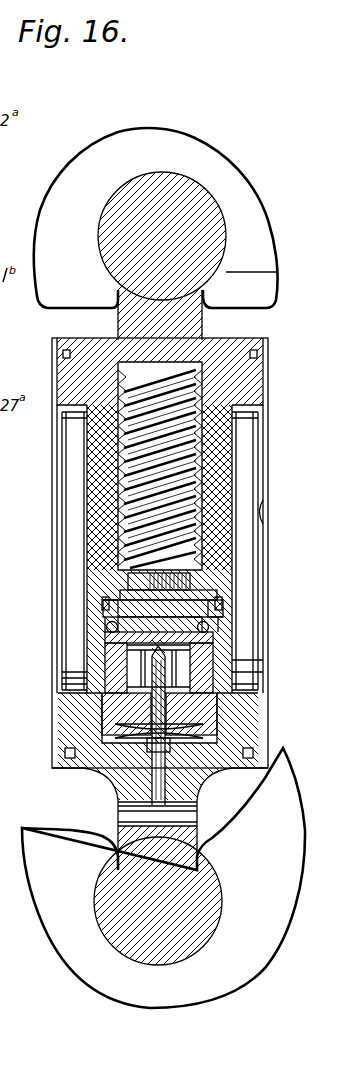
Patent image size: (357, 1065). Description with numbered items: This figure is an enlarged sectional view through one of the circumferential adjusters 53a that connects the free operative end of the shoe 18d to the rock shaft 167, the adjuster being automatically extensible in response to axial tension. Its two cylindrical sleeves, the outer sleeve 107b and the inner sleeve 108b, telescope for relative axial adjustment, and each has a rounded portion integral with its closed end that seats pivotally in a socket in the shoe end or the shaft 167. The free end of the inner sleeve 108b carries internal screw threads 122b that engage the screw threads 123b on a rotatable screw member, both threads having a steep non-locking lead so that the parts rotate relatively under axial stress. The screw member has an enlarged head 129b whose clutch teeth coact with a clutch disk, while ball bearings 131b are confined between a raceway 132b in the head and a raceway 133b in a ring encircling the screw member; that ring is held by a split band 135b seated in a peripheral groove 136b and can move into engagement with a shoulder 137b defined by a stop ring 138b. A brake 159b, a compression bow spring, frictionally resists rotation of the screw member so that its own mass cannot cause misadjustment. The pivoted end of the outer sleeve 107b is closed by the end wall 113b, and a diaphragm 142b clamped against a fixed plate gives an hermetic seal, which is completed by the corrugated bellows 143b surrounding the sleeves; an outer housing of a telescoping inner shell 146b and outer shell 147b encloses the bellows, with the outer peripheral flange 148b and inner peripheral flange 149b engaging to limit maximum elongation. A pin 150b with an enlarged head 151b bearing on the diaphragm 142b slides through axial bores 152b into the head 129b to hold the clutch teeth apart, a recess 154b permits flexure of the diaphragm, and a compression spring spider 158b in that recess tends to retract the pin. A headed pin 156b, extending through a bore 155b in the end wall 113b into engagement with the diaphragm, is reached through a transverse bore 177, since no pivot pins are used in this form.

The circumferential adjuster 53a is at (231, 152).
The shoe 18d is at (246, 202).
The outer shell 147b is at (267, 385).
The outer peripheral flange 148b is at (267, 477).
The inner shell 146b is at (278, 514).
The inner sleeve 108b is at (211, 445).
The outer sleeve 107b is at (229, 428).
The screw threads 123b is at (205, 390).
The internal screw threads 122b is at (197, 468).
The stop ring 138b is at (238, 590).
The peripheral groove 136b is at (230, 553).
The split band 135b is at (235, 570).
The inner peripheral flange 149b is at (230, 605).
The shoulder 137b is at (213, 616).
The raceway 133b is at (107, 611).
The ball bearings 131b is at (110, 625).
The enlarged head 129b is at (214, 640).
The raceway 132b is at (103, 647).
The brake 159b is at (189, 673).
The bellows 143b is at (246, 667).
The axial bores 152b is at (80, 682).
The end wall 113b is at (218, 759).
The pin 150b is at (160, 712).
The recess 154b is at (107, 733).
The compression spring spider 158b is at (181, 740).
The diaphragm 142b is at (213, 720).
The enlarged head 151b is at (140, 742).
The bore 155b is at (133, 773).
The headed pin 156b is at (157, 787).
The transverse bore 177 is at (118, 818).
The rock shaft 167 is at (258, 976).